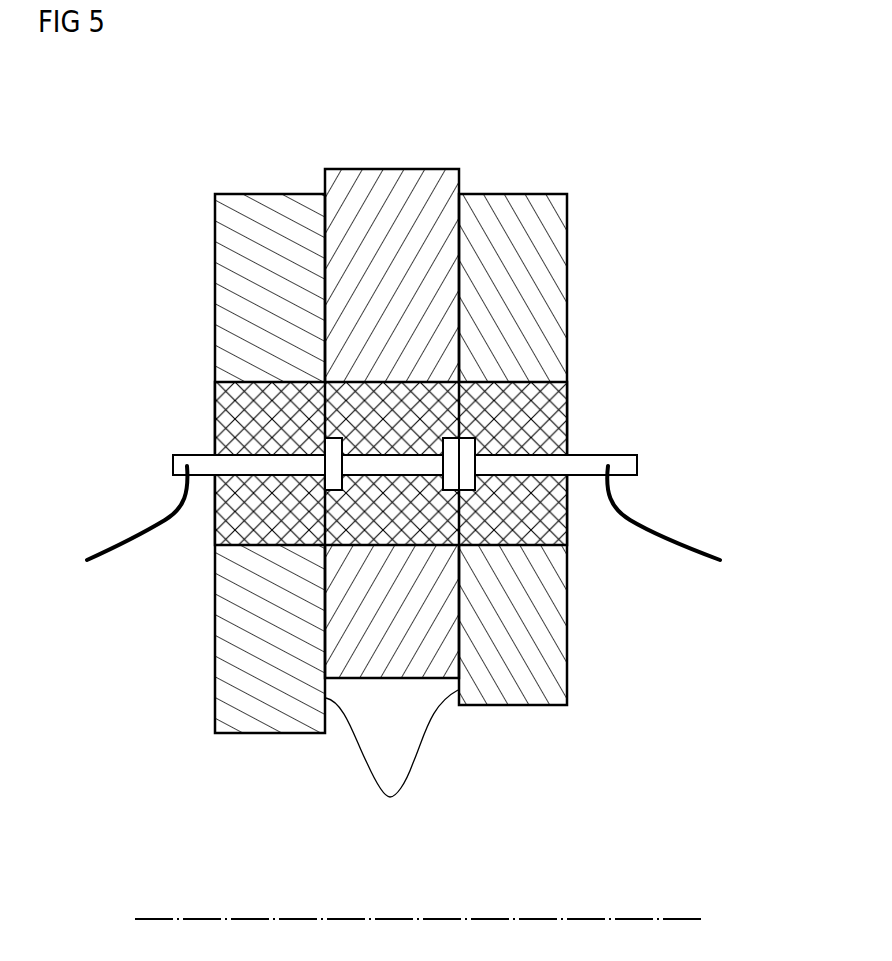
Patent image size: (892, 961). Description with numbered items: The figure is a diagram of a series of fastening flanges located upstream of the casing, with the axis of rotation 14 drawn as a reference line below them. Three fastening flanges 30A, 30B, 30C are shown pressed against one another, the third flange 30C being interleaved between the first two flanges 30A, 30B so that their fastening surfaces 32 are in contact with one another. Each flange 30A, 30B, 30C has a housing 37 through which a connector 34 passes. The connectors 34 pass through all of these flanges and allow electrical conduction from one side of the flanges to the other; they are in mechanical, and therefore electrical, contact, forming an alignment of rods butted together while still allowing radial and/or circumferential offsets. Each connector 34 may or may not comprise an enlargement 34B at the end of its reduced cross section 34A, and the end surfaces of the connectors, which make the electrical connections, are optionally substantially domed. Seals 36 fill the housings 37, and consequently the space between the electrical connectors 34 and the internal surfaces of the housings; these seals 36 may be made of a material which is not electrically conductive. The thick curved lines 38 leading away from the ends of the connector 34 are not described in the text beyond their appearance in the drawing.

The axis of rotation 14 is at (653, 918).
The first fastening flange 30A is at (268, 708).
The second fastening flange 30B is at (538, 690).
The third fastening flange 30C is at (383, 220).
The fastening surfaces 32 is at (323, 270).
The connector 34 is at (367, 402).
The reduced cross section 34A is at (197, 458).
The enlargement 34B is at (443, 490).
The seal 36 is at (215, 395).
The housing 37 is at (287, 429).
The lead wire 38 is at (108, 544).